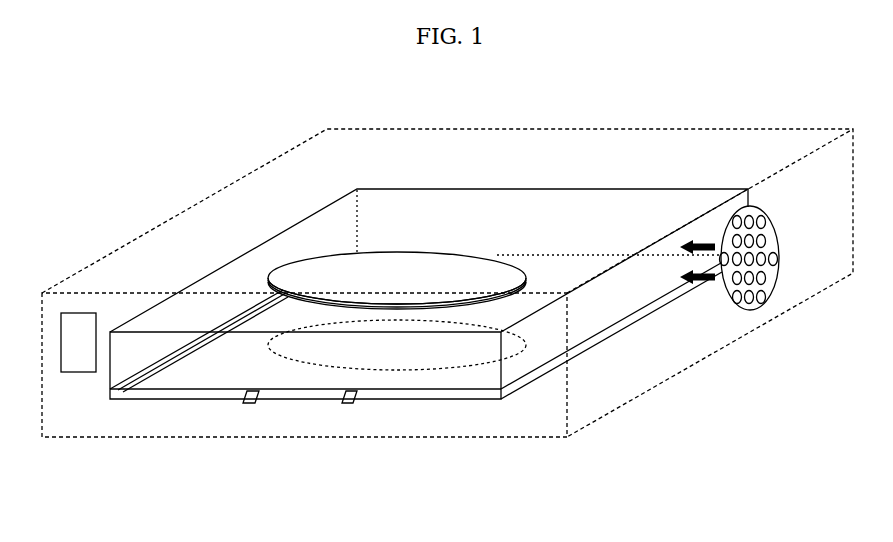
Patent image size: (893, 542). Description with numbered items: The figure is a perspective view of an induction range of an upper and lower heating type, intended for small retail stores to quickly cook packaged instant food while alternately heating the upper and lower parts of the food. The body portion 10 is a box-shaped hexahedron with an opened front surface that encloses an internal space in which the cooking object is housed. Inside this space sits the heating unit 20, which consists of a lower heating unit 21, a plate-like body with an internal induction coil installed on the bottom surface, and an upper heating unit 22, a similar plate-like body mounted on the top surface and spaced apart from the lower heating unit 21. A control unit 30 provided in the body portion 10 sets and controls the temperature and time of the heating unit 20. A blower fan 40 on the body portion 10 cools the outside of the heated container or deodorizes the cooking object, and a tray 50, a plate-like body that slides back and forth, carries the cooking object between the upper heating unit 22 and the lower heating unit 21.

The body portion 10 is at (207, 175).
The heating unit 20 is at (748, 385).
The lower heating unit 21 is at (525, 348).
The upper heating unit 22 is at (525, 275).
The control unit 30 is at (76, 386).
The blower fan 40 is at (777, 288).
The tray 50 is at (383, 398).